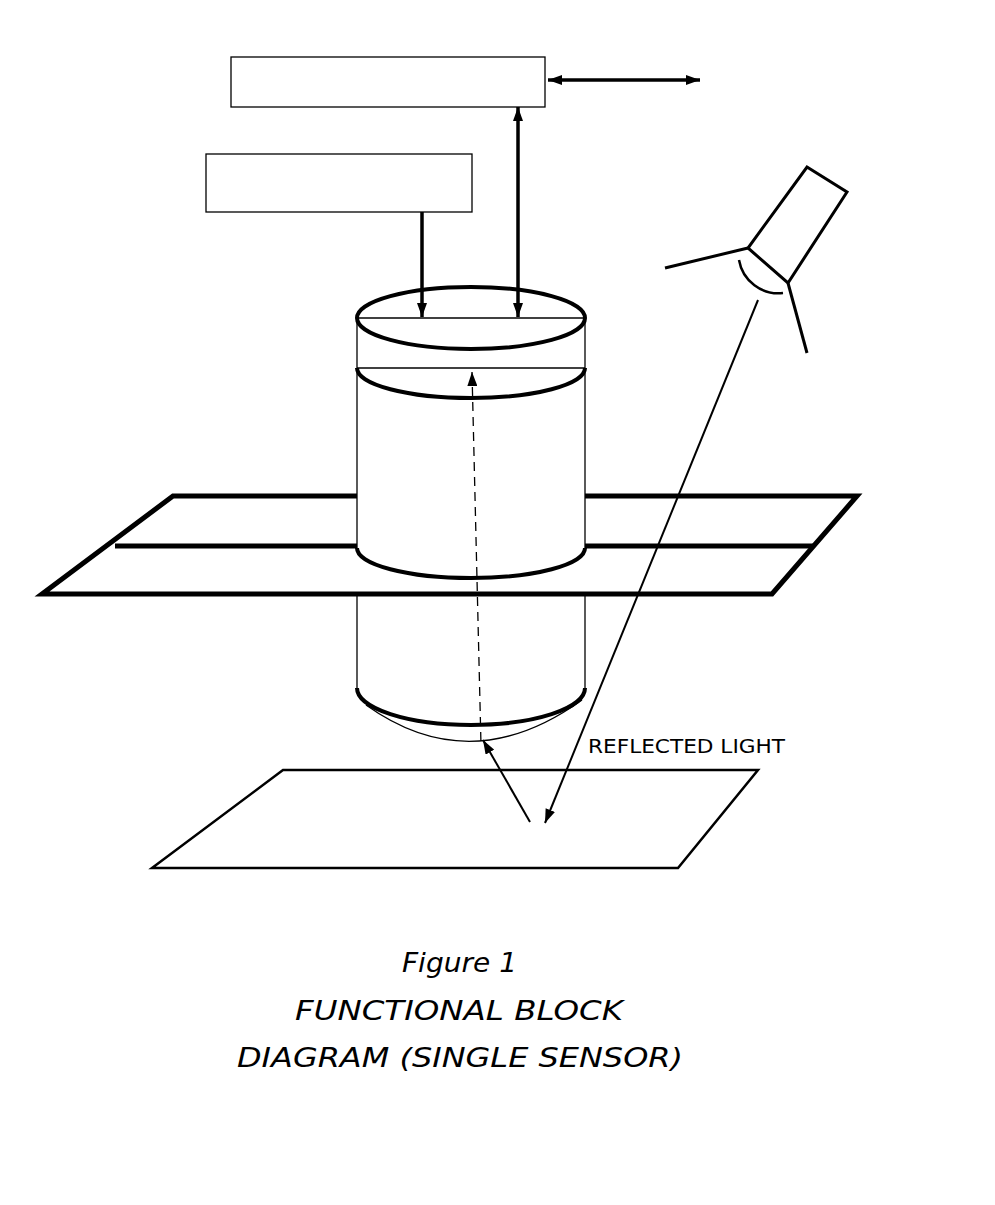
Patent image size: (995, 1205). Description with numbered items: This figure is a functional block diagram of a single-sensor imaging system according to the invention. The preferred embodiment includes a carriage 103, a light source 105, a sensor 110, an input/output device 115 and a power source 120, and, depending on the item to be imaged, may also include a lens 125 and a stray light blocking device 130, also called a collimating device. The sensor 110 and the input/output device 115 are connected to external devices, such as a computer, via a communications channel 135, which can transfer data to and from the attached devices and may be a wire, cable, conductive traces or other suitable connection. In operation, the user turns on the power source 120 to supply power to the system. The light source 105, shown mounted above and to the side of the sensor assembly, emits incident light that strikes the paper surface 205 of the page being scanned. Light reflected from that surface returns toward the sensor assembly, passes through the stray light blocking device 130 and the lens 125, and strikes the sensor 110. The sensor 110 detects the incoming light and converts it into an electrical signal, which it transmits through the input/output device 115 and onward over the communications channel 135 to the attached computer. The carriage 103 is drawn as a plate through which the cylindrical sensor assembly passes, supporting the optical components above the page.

The carriage 103 is at (817, 608).
The light source 105 is at (757, 213).
The sensor 110 is at (353, 338).
The input/output device 115 is at (388, 187).
The power source 120 is at (339, 235).
The lens 125 is at (373, 717).
The stray light blocking device 130 is at (353, 407).
The communications channel 135 is at (709, 49).
The paper surface 205 is at (705, 842).